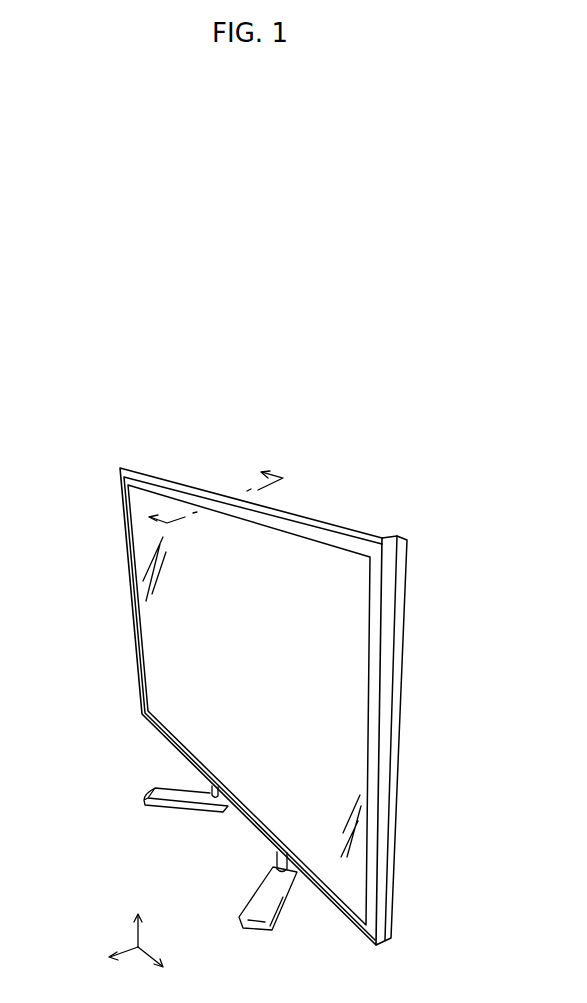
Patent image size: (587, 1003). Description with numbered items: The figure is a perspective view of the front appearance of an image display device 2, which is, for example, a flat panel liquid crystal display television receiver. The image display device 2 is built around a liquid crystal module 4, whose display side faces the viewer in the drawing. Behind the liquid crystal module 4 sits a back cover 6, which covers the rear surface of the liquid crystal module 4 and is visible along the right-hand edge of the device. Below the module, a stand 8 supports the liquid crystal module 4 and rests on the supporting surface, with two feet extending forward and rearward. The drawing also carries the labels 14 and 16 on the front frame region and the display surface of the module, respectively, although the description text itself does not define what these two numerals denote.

The image display device 2 is at (121, 398).
The liquid crystal module 4 is at (218, 536).
The back cover 6 is at (397, 537).
The stand 8 is at (165, 787).
The front bezel frame 14 is at (348, 527).
The display surface 16 is at (158, 643).